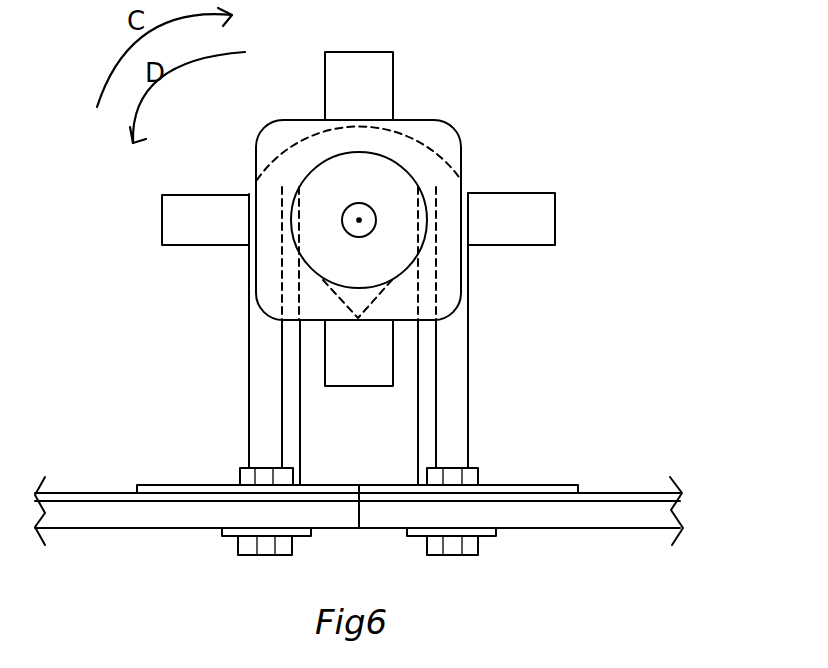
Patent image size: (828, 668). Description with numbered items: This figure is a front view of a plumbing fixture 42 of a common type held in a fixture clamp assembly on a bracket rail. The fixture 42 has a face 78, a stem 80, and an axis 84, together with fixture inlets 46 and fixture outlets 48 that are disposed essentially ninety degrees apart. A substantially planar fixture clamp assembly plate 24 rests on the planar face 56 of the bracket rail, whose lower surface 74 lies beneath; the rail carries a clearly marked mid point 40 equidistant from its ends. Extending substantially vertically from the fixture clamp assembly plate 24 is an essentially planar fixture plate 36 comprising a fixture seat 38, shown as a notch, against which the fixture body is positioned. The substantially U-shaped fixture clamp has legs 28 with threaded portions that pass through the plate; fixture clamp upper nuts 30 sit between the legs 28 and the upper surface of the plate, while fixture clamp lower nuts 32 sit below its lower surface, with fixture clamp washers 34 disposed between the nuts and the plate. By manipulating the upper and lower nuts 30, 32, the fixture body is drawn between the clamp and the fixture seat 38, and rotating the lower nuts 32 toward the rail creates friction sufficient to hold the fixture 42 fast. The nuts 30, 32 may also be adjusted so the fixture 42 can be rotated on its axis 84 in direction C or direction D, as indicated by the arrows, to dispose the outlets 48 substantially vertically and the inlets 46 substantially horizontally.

The fixture clamp assembly plate 24 is at (163, 485).
The legs 28 is at (468, 354).
The fixture clamp upper nuts 30 is at (240, 472).
The fixture clamp lower nuts 32 is at (480, 554).
The fixture clamp washers 34 is at (485, 533).
The fixture plate 36 is at (408, 407).
The fixture seat 38 is at (323, 282).
The mid point 40 is at (376, 458).
The plumbing fixture 42 is at (468, 312).
The fixture inlets 46 is at (162, 212).
The fixture outlets 48 is at (393, 90).
The planar faces 56 is at (80, 493).
The lower surfaces 74 is at (145, 528).
The face 78 is at (291, 236).
The stem 80 is at (368, 183).
The axis 84 is at (375, 254).